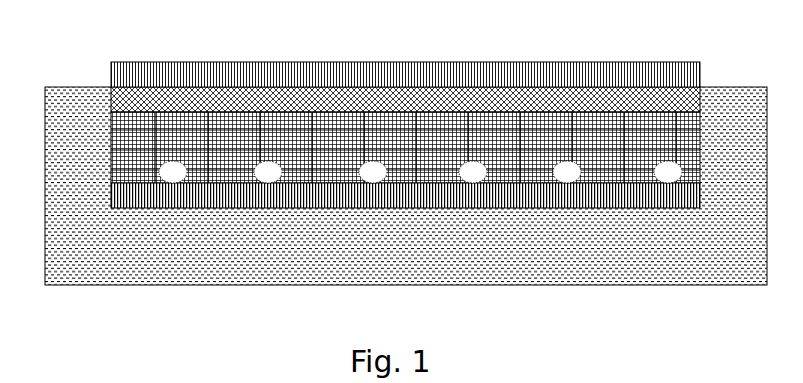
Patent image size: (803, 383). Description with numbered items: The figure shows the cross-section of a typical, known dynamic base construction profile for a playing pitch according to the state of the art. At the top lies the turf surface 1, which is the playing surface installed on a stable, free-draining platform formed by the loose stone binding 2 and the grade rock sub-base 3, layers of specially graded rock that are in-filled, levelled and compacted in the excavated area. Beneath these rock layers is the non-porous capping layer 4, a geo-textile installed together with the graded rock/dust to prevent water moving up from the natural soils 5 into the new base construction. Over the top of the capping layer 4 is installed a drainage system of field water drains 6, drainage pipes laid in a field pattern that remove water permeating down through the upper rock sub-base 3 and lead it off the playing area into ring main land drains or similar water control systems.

The turf surface 1 is at (118, 67).
The loose stone binding 2 is at (125, 98).
The grade rock sub-base 3 is at (118, 145).
The non-porous capping layer 4 is at (118, 197).
The natural soils 5 is at (249, 280).
The field water drains 6 is at (177, 165).